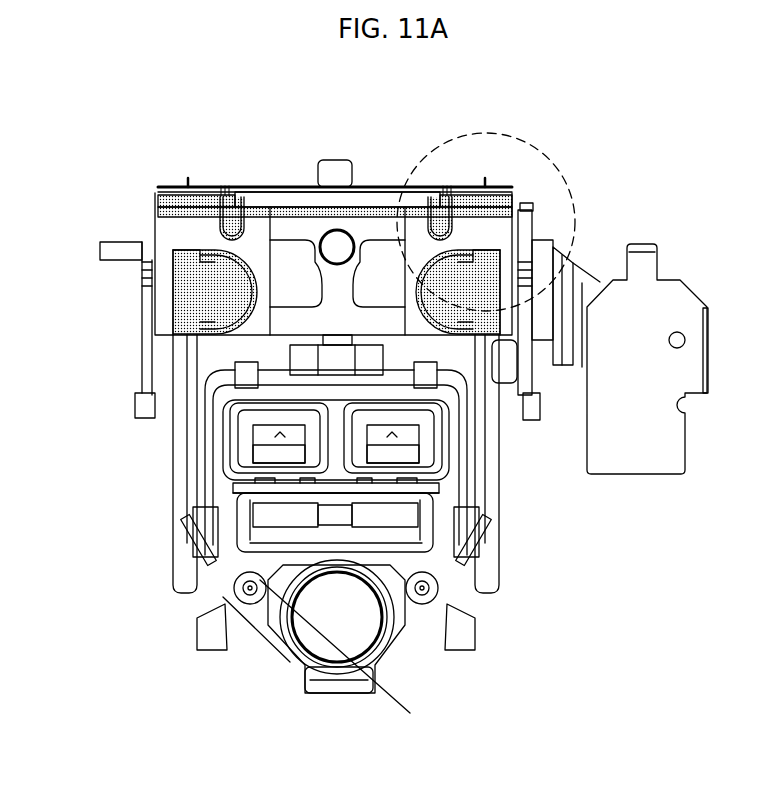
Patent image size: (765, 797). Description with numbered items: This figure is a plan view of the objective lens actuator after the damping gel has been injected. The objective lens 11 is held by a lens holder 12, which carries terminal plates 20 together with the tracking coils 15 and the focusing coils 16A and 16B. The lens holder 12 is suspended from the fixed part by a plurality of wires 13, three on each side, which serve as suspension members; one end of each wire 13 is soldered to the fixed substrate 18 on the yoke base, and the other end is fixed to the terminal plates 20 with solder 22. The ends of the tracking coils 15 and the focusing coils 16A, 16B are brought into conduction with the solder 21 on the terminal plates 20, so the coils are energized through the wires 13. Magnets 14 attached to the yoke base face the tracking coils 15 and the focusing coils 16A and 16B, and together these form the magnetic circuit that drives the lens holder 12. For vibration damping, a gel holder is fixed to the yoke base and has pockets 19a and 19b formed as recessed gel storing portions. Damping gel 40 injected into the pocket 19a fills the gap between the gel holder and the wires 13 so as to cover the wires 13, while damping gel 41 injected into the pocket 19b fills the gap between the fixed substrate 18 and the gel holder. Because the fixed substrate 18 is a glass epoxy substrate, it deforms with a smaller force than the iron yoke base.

The objective lens 11 is at (323, 632).
The lens holder 12 is at (397, 640).
The wires 13 is at (185, 432).
The magnets 14 is at (262, 437).
The tracking coils 15 is at (294, 505).
The focusing coil 16A is at (385, 447).
The focusing coil 16B is at (280, 447).
The fixed substrate 18 is at (387, 186).
The pocket 19a is at (218, 307).
The pocket 19b is at (227, 233).
The terminal plates 20 is at (195, 548).
The solder 21 is at (250, 588).
The solder 22 is at (203, 523).
The damping gel 40 is at (207, 283).
The damping gel 41 is at (225, 195).